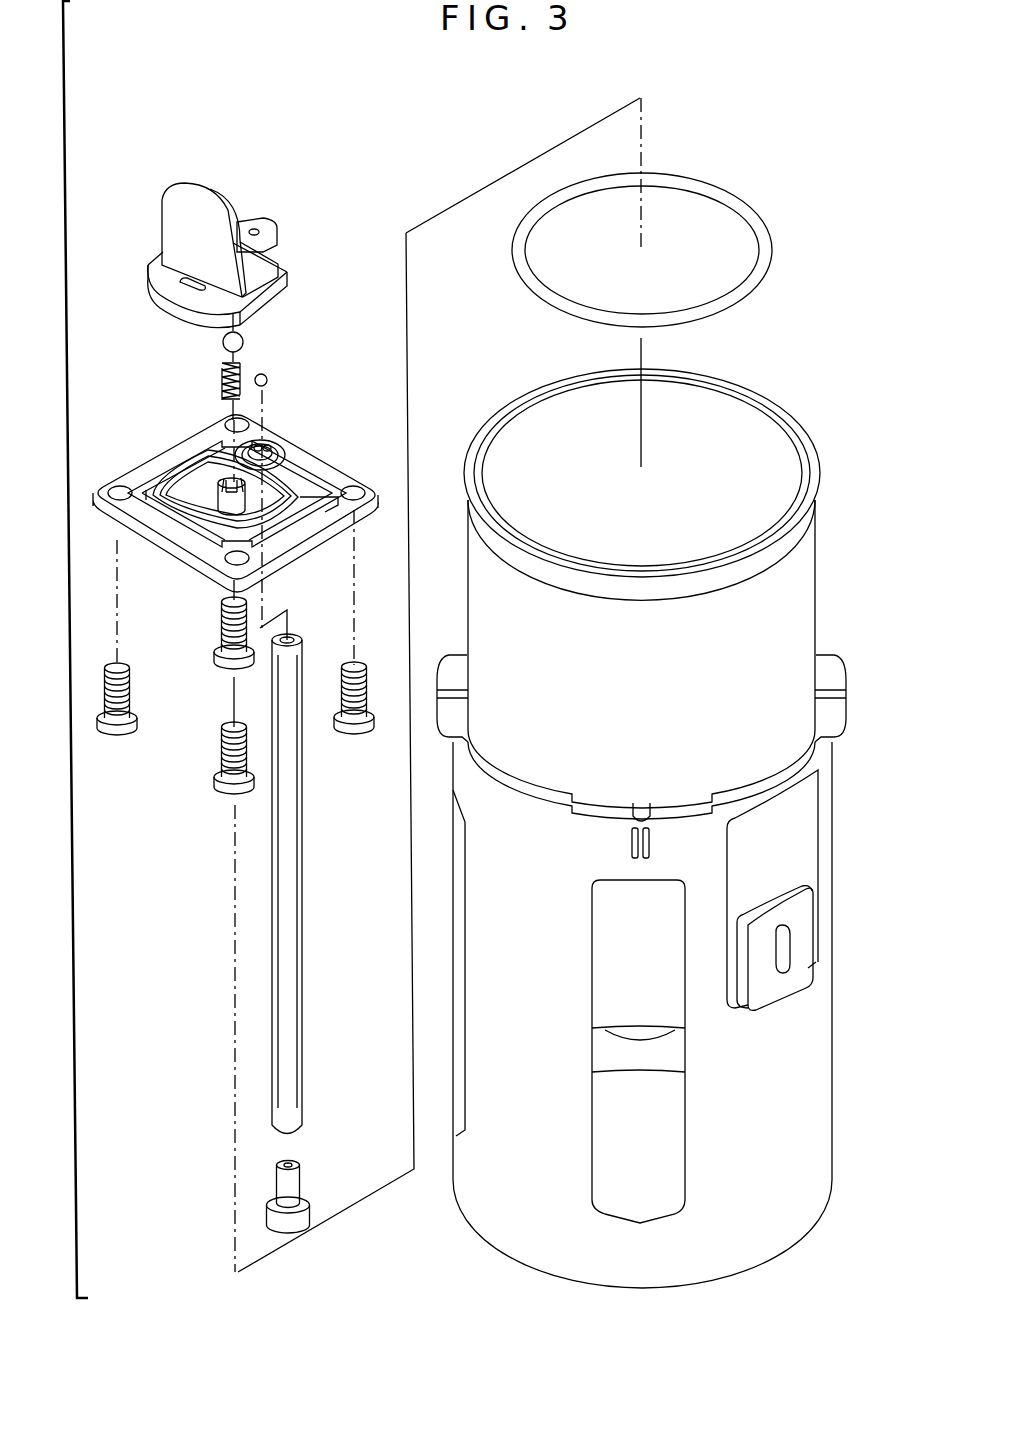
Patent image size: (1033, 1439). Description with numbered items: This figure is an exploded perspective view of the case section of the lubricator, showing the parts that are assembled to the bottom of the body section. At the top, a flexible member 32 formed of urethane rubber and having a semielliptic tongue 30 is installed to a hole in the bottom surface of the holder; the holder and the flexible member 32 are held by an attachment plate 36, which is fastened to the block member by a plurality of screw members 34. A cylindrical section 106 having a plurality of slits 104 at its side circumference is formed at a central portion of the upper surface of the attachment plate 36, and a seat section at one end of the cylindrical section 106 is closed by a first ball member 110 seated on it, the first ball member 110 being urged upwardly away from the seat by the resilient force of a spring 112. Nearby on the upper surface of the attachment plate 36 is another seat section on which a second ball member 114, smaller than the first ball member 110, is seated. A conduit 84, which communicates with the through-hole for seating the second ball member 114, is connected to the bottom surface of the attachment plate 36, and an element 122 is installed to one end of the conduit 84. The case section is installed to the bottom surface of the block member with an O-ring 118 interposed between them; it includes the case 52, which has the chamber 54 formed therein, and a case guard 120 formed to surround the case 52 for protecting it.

The semielliptic tongue 30 is at (187, 217).
The flexible member 32 is at (167, 313).
The screw members 34 is at (226, 638).
The attachment plate 36 is at (137, 553).
The case 52 is at (808, 578).
The chamber 54 is at (738, 422).
The conduit 84 is at (294, 918).
The slits 104 is at (222, 482).
The cylindrical section 106 is at (282, 462).
The first ball member 110 is at (243, 341).
The spring 112 is at (241, 372).
The second ball member 114 is at (267, 381).
The O-ring 118 is at (720, 192).
The case guard 120 is at (818, 1012).
The element 122 is at (292, 1188).